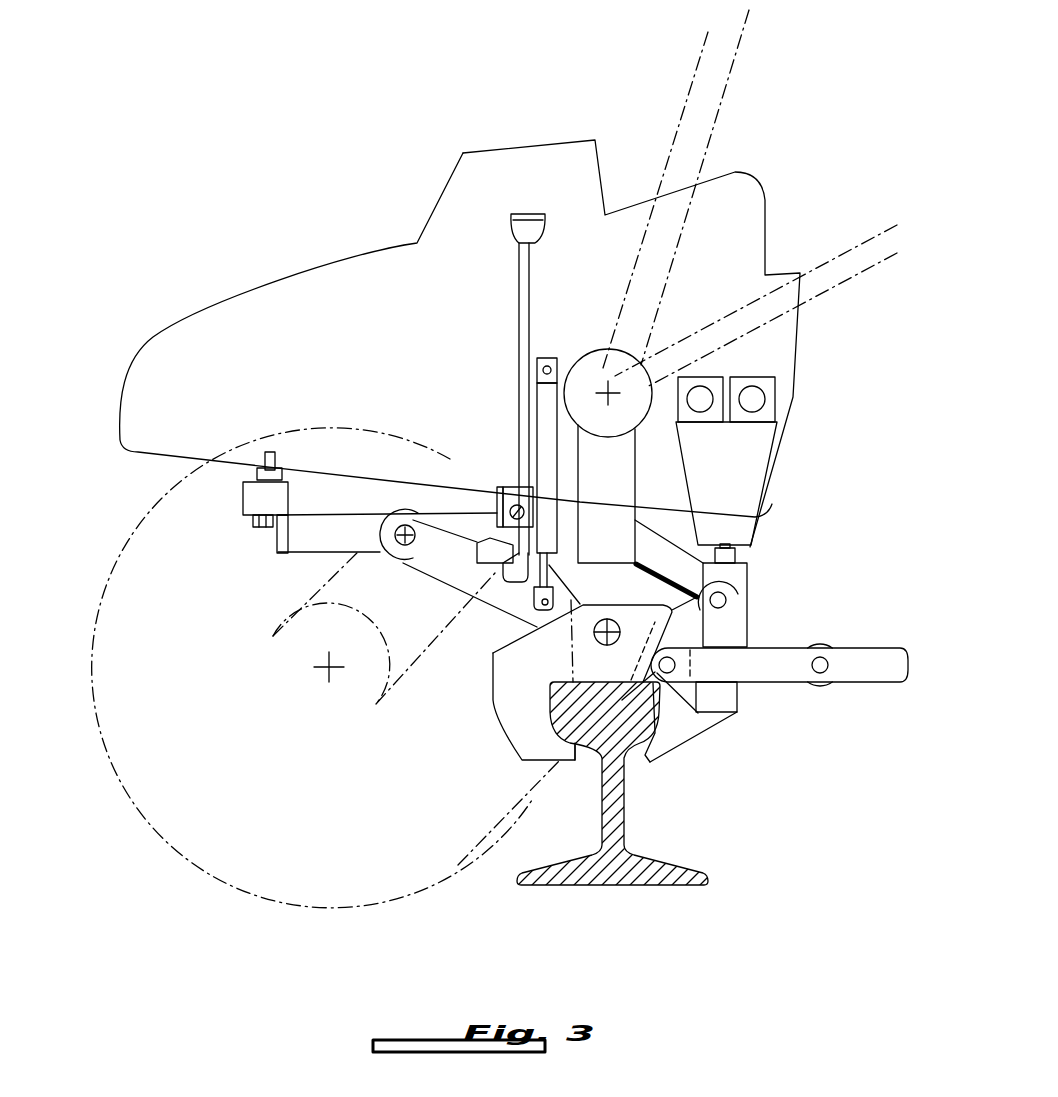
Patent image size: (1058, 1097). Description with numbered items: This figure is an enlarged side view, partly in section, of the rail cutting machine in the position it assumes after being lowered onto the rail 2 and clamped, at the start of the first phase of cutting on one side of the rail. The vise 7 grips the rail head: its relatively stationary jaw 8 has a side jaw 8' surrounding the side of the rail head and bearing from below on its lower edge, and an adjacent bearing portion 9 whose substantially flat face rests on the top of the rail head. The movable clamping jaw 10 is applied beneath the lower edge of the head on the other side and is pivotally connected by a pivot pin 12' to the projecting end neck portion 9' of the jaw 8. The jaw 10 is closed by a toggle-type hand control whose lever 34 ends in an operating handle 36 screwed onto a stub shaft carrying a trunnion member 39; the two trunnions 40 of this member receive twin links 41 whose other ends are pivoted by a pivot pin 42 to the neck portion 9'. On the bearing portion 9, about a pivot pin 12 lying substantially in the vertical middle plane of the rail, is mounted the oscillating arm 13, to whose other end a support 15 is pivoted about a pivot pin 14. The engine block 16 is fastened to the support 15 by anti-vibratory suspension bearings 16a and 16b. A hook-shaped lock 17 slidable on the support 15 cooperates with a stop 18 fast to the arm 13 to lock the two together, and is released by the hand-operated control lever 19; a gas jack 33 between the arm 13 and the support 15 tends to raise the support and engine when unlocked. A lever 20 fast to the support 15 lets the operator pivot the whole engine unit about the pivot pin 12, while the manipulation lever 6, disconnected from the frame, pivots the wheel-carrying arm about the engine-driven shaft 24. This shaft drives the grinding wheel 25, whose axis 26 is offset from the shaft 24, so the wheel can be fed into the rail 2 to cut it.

The rail 2 is at (613, 868).
The manipulation lever 6 is at (855, 250).
The vise 7 is at (577, 767).
The relatively stationary jaw 8 is at (506, 710).
The jaw 8' is at (519, 779).
The bearing portion 9 is at (567, 649).
The projecting end neck portion 9' is at (652, 559).
The movable clamping jaw 10 is at (670, 680).
The pivot pin 12 is at (696, 618).
The pivot pin 12' is at (766, 596).
The oscillating arm 13 is at (450, 562).
The pivot pin 14 is at (407, 553).
The support 15 is at (552, 362).
The engine block 16 is at (557, 163).
The anti-vibratory suspension bearing 16a is at (737, 484).
The anti-vibratory suspension bearing 16b is at (247, 490).
The lock 17 is at (497, 577).
The stop 18 is at (493, 537).
The hand-operated control lever 19 is at (517, 255).
The lever 20 is at (683, 117).
The shaft 24 is at (612, 390).
The grinding wheel 25 is at (111, 560).
The axis 26 is at (328, 667).
The gas jack 33 is at (532, 425).
The lever 34 is at (805, 696).
The operating handle 36 is at (890, 655).
The trunnion member 39 is at (825, 645).
The trunnion 40 is at (835, 672).
The link 41 is at (752, 684).
The pivot pin 42 is at (705, 740).